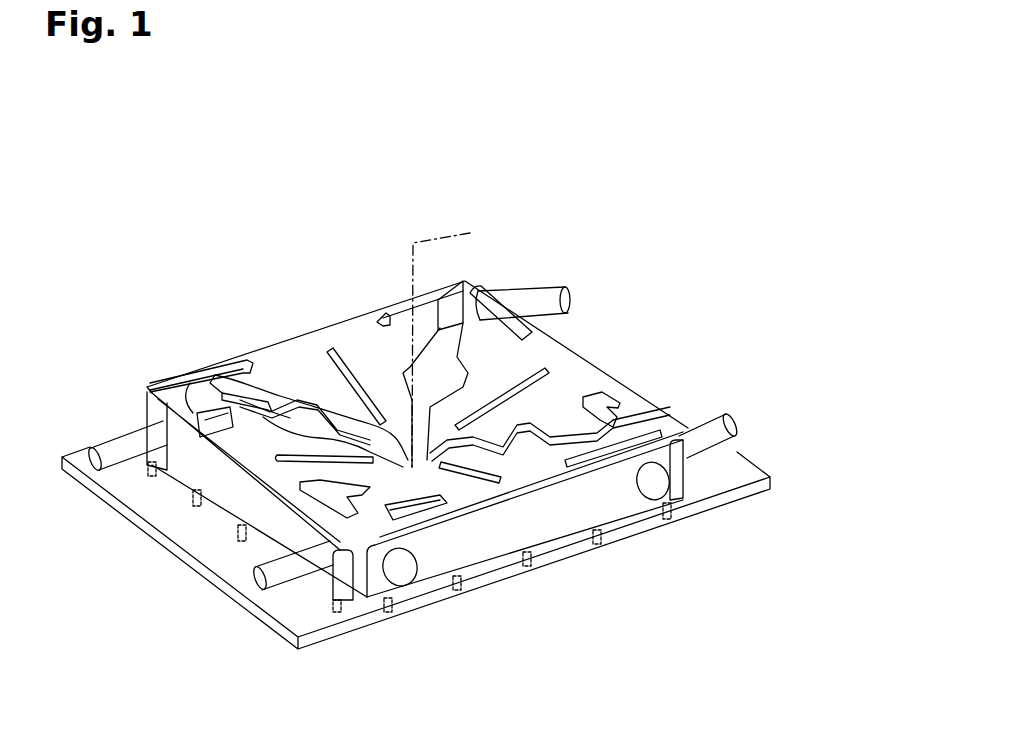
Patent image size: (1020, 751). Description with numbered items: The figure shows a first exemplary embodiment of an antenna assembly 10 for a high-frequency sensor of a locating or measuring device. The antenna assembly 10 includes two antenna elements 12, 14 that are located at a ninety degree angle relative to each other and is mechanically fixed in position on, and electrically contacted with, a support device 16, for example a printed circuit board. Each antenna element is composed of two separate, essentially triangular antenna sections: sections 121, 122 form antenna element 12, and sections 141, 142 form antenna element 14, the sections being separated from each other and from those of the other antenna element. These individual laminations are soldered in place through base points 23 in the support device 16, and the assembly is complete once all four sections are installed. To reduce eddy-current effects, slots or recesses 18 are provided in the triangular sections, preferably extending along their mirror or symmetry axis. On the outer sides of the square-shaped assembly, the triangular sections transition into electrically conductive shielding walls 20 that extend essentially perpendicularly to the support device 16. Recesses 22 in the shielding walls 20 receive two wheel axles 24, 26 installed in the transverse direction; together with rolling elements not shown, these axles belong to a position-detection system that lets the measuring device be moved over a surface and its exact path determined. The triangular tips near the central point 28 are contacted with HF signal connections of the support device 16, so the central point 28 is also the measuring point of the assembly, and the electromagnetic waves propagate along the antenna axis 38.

The antenna assembly 10 is at (537, 253).
The antenna element 12 is at (415, 455).
The antenna section 121 is at (510, 493).
The antenna section 122 is at (327, 370).
The antenna element 14 is at (585, 341).
The antenna section 141 is at (557, 400).
The antenna section 142 is at (260, 430).
The support device 16 is at (303, 458).
The slots or recesses 18 is at (360, 407).
The shielding walls 20 is at (728, 476).
The recesses 22 is at (658, 487).
The base points 23 is at (191, 517).
The wheel axle 24 is at (110, 447).
The wheel axle 26 is at (733, 427).
The central point 28 is at (293, 405).
The antenna axis 38 is at (456, 340).